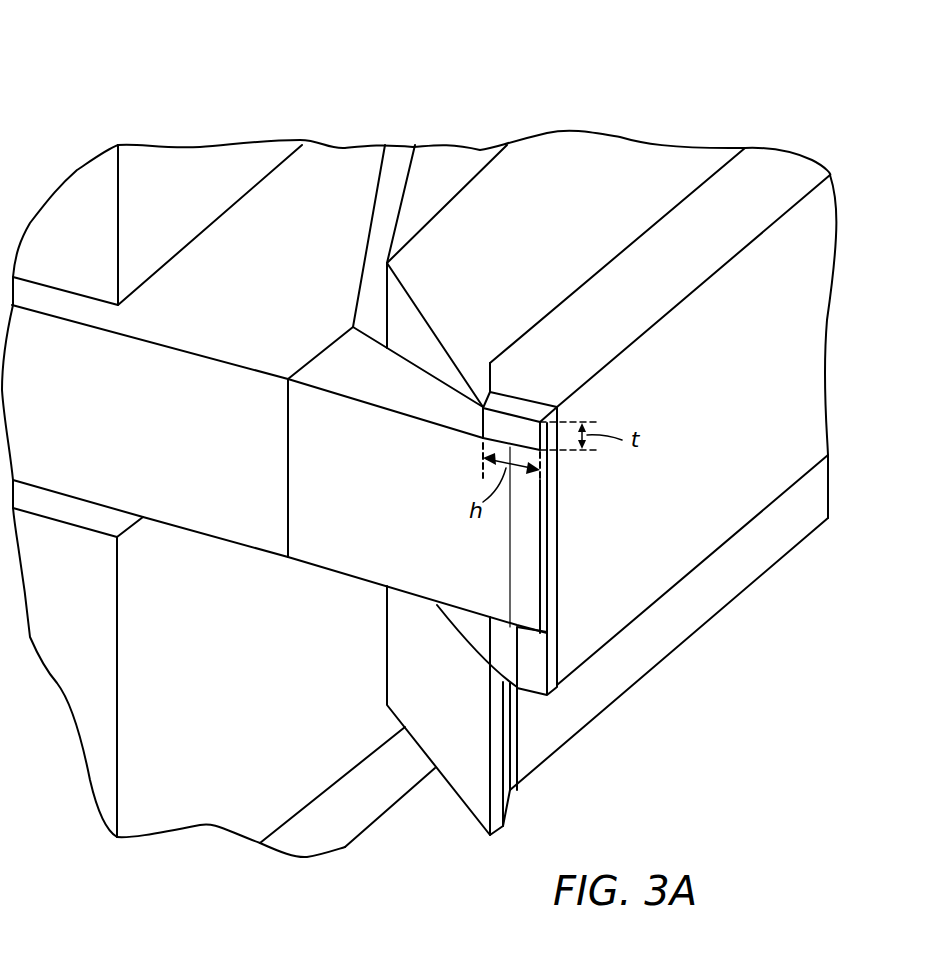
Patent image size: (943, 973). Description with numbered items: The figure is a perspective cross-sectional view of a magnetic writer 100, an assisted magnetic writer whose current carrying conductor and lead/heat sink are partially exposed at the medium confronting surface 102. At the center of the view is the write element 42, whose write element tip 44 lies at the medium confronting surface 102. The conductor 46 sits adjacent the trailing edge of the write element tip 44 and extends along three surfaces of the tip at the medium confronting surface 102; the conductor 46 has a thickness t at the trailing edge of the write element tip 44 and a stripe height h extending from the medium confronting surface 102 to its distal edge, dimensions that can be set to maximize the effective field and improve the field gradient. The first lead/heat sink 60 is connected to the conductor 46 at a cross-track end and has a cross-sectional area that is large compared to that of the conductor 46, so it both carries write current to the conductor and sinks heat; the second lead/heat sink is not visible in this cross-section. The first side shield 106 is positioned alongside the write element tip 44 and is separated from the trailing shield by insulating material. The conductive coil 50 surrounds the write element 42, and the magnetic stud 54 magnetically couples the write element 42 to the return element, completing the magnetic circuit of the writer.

The magnetic writer 100 is at (652, 102).
The write element 42 is at (361, 498).
The write element tip 44 is at (527, 593).
The conductor 46 is at (523, 410).
The conductive coil 50 is at (63, 252).
The magnetic stud 54 is at (240, 315).
The first lead/heat sink 60 is at (515, 251).
The medium confronting surface 102 is at (710, 522).
The first side shield 106 is at (631, 290).